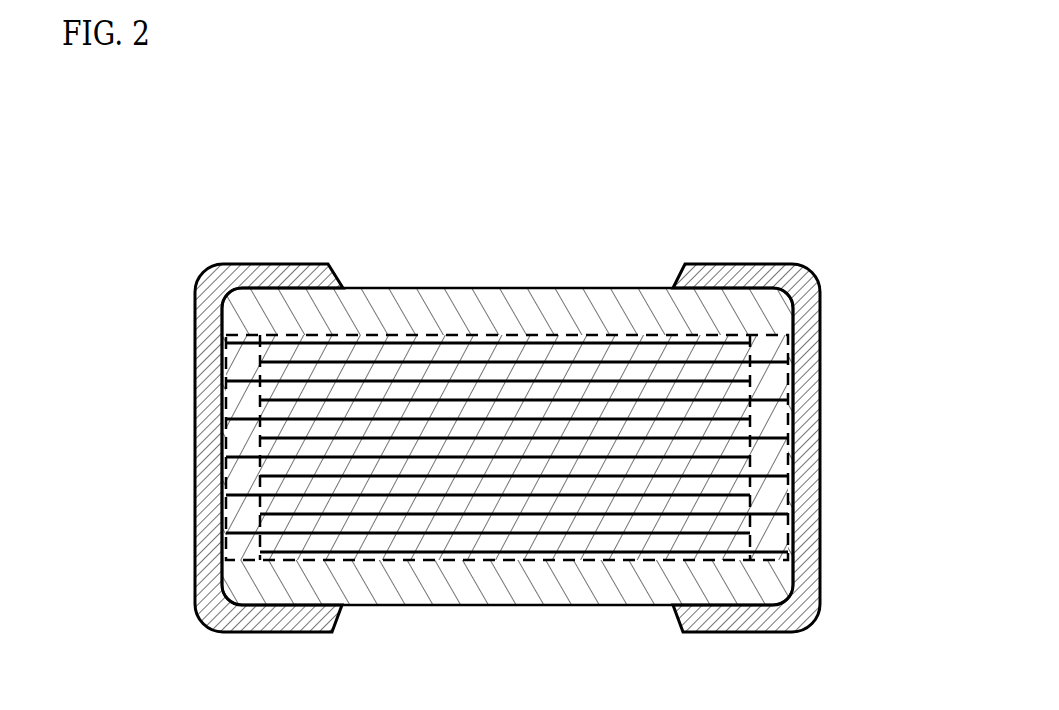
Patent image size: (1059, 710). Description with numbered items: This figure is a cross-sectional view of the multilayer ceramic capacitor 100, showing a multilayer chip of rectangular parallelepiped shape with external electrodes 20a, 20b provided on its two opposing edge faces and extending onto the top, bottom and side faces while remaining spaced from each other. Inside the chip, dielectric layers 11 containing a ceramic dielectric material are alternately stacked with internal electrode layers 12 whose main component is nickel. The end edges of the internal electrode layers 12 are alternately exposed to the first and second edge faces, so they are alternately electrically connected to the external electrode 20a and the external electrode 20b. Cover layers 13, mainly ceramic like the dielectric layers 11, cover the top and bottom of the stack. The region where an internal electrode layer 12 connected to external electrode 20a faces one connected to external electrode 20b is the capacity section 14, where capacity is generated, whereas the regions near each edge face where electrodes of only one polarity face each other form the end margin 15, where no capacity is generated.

The multilayer ceramic capacitor 100 is at (722, 212).
The external electrode 20a is at (220, 265).
The external electrode 20b is at (783, 263).
The cover layer 13 is at (407, 300).
The capacity section 14 is at (528, 335).
The end margin 15 is at (243, 333).
The internal electrode layer 12 is at (452, 495).
The dielectric layer 11 is at (621, 520).